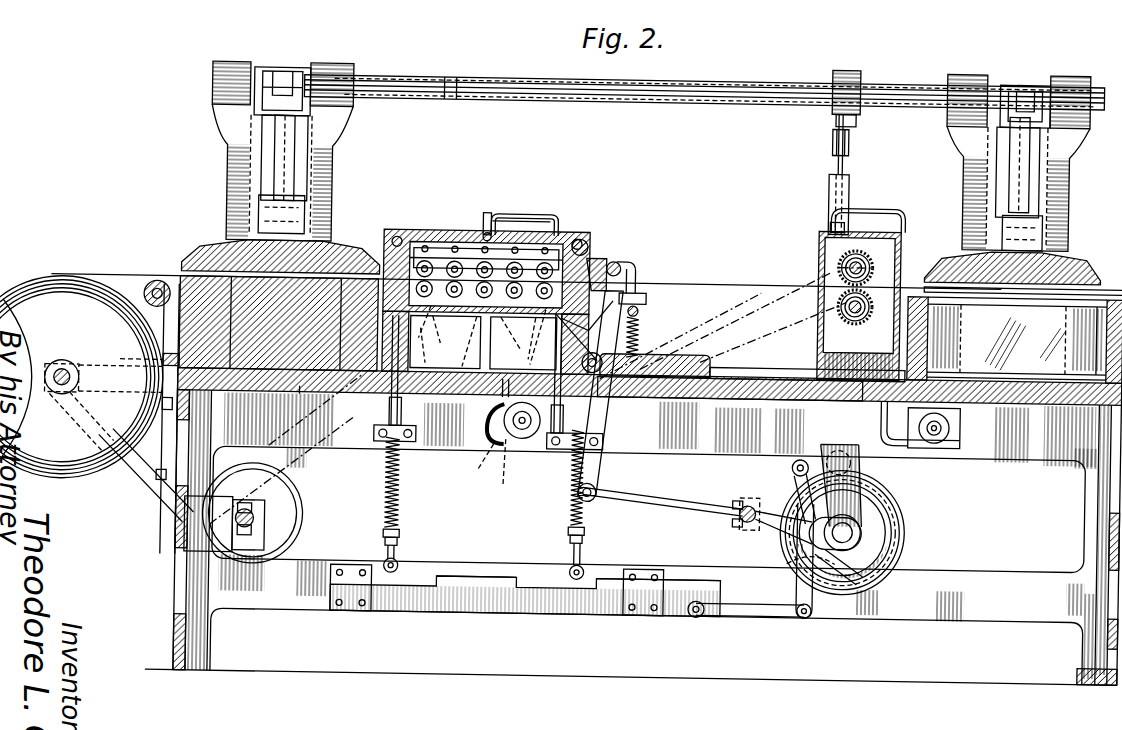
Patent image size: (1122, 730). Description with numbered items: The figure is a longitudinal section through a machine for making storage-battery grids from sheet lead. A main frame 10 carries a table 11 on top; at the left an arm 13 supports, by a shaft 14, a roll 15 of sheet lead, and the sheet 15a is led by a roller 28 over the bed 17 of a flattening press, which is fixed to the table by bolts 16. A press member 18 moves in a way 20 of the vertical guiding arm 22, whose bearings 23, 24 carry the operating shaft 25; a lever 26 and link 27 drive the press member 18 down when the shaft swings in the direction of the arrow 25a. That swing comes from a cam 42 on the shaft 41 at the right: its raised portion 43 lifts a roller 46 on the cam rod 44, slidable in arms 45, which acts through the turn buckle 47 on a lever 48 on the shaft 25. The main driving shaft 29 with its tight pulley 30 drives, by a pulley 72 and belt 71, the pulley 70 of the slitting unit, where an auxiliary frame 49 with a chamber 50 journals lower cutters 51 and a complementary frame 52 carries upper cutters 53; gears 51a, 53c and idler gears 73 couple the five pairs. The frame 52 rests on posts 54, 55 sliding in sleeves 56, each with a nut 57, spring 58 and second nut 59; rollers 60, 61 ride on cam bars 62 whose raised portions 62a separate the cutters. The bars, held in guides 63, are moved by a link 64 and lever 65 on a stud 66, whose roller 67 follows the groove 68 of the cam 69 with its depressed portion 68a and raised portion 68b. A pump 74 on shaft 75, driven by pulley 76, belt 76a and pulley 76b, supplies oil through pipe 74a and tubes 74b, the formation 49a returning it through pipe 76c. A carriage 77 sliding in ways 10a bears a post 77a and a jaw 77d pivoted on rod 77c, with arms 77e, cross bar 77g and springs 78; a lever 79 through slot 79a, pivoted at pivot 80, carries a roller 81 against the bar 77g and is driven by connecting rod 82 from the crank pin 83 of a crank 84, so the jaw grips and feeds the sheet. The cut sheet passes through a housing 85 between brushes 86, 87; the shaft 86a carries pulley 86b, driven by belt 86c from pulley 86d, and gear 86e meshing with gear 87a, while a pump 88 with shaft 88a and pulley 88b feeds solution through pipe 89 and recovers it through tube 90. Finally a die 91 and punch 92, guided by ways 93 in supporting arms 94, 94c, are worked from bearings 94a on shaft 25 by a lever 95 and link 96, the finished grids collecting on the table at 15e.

The main frame 10 is at (192, 590).
The ways 10a is at (765, 366).
The table 11 is at (296, 398).
The arm 13 is at (135, 485).
The shaft 14 is at (60, 392).
The roll 15 is at (50, 283).
The sheet lead 15a is at (120, 282).
The grid receiving location 15e is at (1088, 358).
The bolts 16 is at (160, 362).
The bed 17 is at (205, 318).
The press member 18 is at (190, 258).
The way 20 is at (268, 190).
The vertical guiding arm 22 is at (262, 152).
The bearing 23 is at (225, 67).
The bearing 24 is at (333, 68).
The operating shaft 25 is at (410, 79).
The arrow 25a is at (446, 101).
The arm or lever 26 is at (282, 76).
The link 27 is at (278, 166).
The roller 28 is at (143, 304).
The main driving shaft 29 is at (187, 536).
The tight pulley 30 is at (300, 560).
The cam shaft 41 is at (860, 568).
The cam 42 is at (900, 505).
The raised portion 43 is at (870, 475).
The cam rod 44 is at (840, 163).
The arms 45 is at (846, 186).
The roller 46 is at (852, 452).
The turn buckle 47 is at (845, 140).
The lever 48 is at (856, 72).
The auxiliary frame member 49 is at (545, 340).
The collecting formation 49a is at (531, 341).
The chamber 50 is at (528, 300).
The rotary cutting tools 51 is at (500, 296).
The gear 51a is at (437, 326).
The complementary frame member 52 is at (385, 232).
The rotary cutting tools 53 is at (458, 248).
The gear 53c is at (521, 221).
The supporting posts 54 is at (390, 400).
The supporting posts 55 is at (600, 305).
The sleeves 56 is at (402, 420).
The nut 57 is at (380, 428).
The spring 58 is at (402, 494).
The second nut 59 is at (404, 534).
The roller 60 is at (402, 566).
The roller 61 is at (572, 570).
The cam bar 62 is at (470, 596).
The raised portions 62a is at (445, 568).
The guides 63 is at (360, 612).
The link 64 is at (750, 614).
The lever 65 is at (800, 588).
The stud 66 is at (794, 464).
The cam roller 67 is at (775, 540).
The cam groove 68 is at (880, 560).
The depressed portion 68a is at (798, 566).
The raised portion 68b is at (865, 528).
The cam 69 is at (905, 548).
The driving pulley 70 is at (416, 248).
The belt 71 is at (345, 476).
The pulley 72 is at (300, 492).
The idler gear 73 is at (470, 246).
The pump 74 is at (550, 450).
The discharge pipe 74a is at (552, 216).
The tubes 74b is at (584, 240).
The pump shaft 75 is at (515, 438).
The pulley 76 is at (501, 468).
The belt 76a is at (486, 420).
The pulley 76b is at (446, 336).
The pipe 76c is at (463, 341).
The carriage 77 is at (706, 353).
The post 77a is at (642, 290).
The rod 77c is at (615, 261).
The jaw member 77d is at (597, 258).
The arms 77e is at (634, 266).
The cross bar 77g is at (638, 307).
The springs 78 is at (640, 330).
The lever 79 is at (600, 470).
The slot 79a is at (610, 392).
The pivot 80 is at (593, 372).
The roller 81 is at (700, 292).
The connecting rod 82 is at (660, 500).
The crank pin 83 is at (738, 500).
The crank 84 is at (755, 503).
The housing 85 is at (817, 240).
The rotary brush 86 is at (870, 256).
The brush shaft 86a is at (866, 264).
The pulley 86b is at (838, 264).
The belt 86c is at (764, 288).
The pulley 86d is at (476, 459).
The gear 86e is at (836, 218).
The rotary brush 87 is at (840, 310).
The gear 87a is at (825, 300).
The rotary pump 88 is at (961, 436).
The pump shaft 88a is at (950, 421).
The pulley 88b is at (944, 436).
The pipe 89 is at (880, 218).
The tube 90 is at (881, 416).
The die member 91 is at (935, 318).
The punch 92 is at (1080, 265).
The ways 93 is at (1036, 186).
The eccentric 94 is at (960, 128).
The bearings 94a is at (1066, 68).
The supporting arm 94c is at (1068, 140).
The operating lever 95 is at (1010, 150).
The link 96 is at (1000, 194).